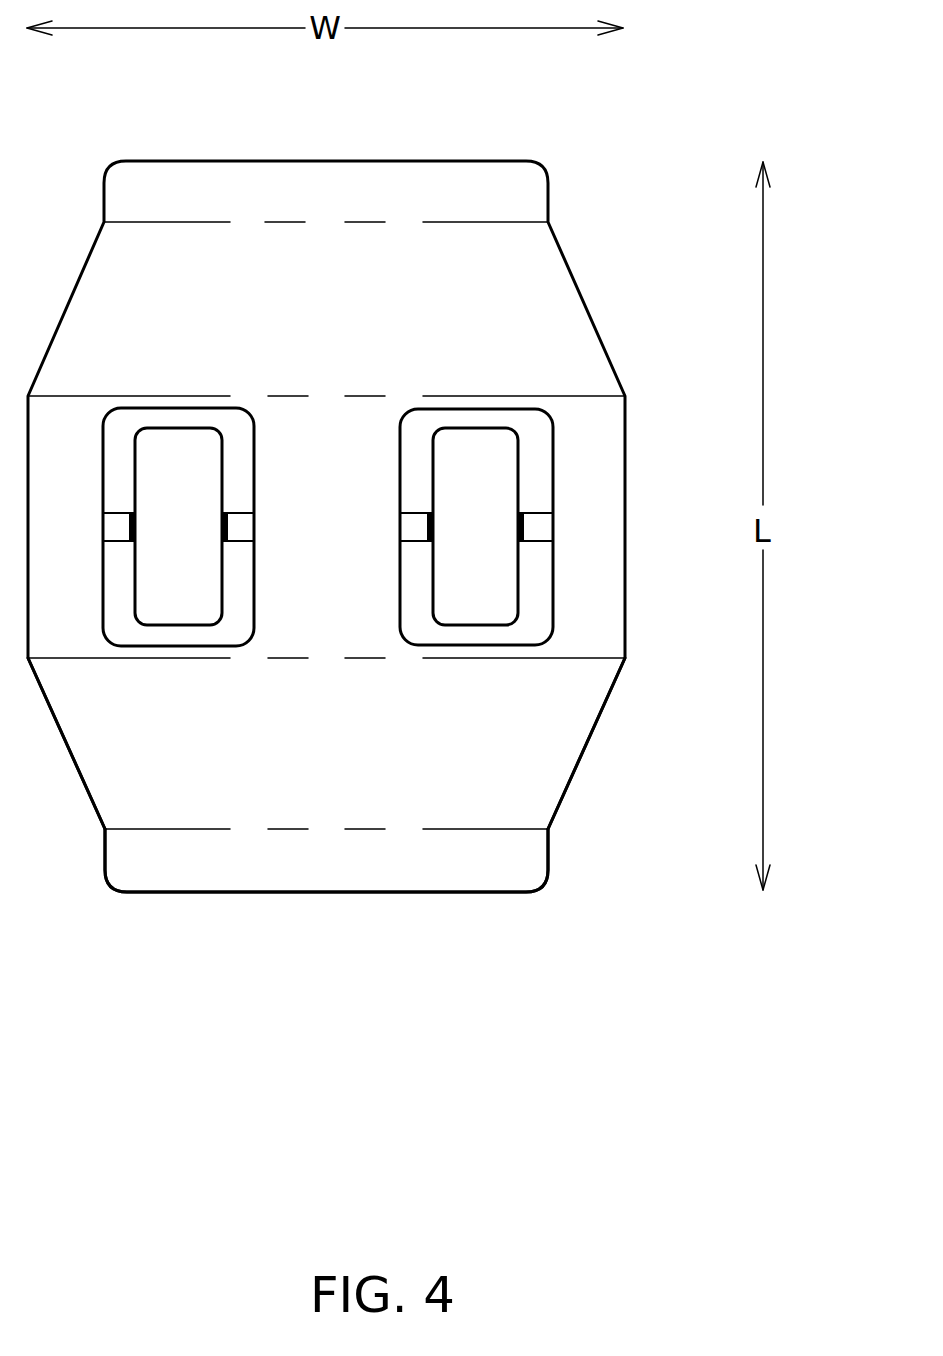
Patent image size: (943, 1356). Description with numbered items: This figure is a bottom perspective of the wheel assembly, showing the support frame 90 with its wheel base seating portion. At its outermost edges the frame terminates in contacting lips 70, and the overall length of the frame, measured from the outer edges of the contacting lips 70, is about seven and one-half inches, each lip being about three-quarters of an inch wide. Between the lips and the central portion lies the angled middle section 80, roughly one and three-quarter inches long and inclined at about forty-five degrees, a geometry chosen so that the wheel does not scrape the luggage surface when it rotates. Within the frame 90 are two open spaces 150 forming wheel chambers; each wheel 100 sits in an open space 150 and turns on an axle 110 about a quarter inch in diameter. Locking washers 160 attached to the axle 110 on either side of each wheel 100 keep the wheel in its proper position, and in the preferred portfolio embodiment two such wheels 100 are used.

The contacting lips 70 is at (560, 848).
The angled middle section 80 is at (590, 750).
The frame 90 is at (633, 611).
The wheel 100 is at (212, 581).
The axle 110 is at (247, 525).
The open space 150 is at (244, 443).
The locking washers 160 is at (530, 512).